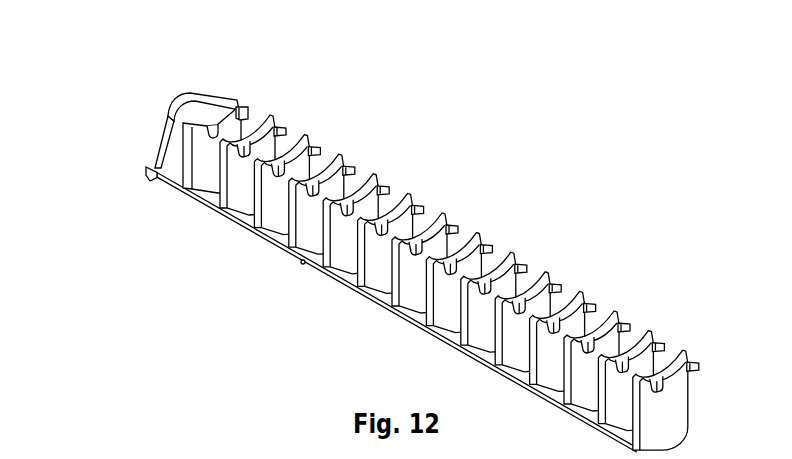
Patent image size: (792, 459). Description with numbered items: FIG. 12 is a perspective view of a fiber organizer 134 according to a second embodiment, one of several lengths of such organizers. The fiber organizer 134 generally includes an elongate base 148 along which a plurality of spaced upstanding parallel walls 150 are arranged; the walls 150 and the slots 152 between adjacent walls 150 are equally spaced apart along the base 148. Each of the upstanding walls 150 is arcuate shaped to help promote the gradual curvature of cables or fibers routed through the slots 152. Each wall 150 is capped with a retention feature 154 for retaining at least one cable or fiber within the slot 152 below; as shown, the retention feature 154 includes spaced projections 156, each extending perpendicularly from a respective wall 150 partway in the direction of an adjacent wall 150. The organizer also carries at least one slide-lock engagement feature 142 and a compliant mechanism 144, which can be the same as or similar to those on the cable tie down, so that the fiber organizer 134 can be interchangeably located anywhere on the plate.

The fiber organizer 134 is at (688, 397).
The slide-lock engagement feature 142 is at (303, 263).
The compliant mechanism 144 is at (203, 98).
The elongate base 148 is at (378, 300).
The upstanding parallel walls 150 is at (337, 185).
The slots 152 is at (430, 218).
The retention feature 154 is at (249, 108).
The spaced projections 156 is at (285, 128).